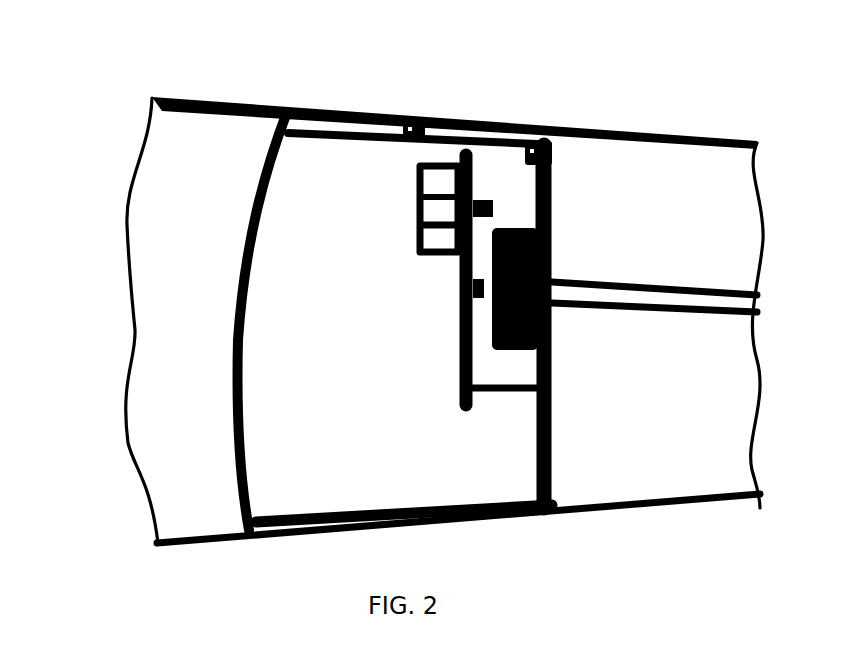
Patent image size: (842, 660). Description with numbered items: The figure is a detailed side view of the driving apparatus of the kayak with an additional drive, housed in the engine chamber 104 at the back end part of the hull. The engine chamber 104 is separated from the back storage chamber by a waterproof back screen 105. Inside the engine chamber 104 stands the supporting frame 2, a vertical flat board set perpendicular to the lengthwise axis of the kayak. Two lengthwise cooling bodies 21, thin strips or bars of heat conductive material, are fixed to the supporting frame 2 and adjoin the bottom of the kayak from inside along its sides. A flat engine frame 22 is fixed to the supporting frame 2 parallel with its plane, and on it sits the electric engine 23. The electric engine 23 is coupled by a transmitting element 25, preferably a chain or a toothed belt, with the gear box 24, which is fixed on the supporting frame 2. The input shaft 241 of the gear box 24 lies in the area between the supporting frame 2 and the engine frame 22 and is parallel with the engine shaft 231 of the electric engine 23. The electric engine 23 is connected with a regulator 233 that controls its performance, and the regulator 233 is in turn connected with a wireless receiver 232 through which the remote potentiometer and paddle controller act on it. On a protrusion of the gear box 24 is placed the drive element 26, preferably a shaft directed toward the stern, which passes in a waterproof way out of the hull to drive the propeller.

The supporting frame 2 is at (556, 483).
The cooling bodies 21 is at (289, 510).
The engine frame 22 is at (457, 292).
The electric engine 23 is at (436, 211).
The engine shaft 231 is at (472, 213).
The wireless receiver 232 is at (413, 124).
The regulator 233 is at (546, 129).
The gear box 24 is at (513, 354).
The input shaft 241 is at (481, 298).
The transmitting element 25 is at (548, 184).
The drive element 26 is at (720, 306).
The engine chamber 104 is at (333, 190).
The back screen 105 is at (250, 207).